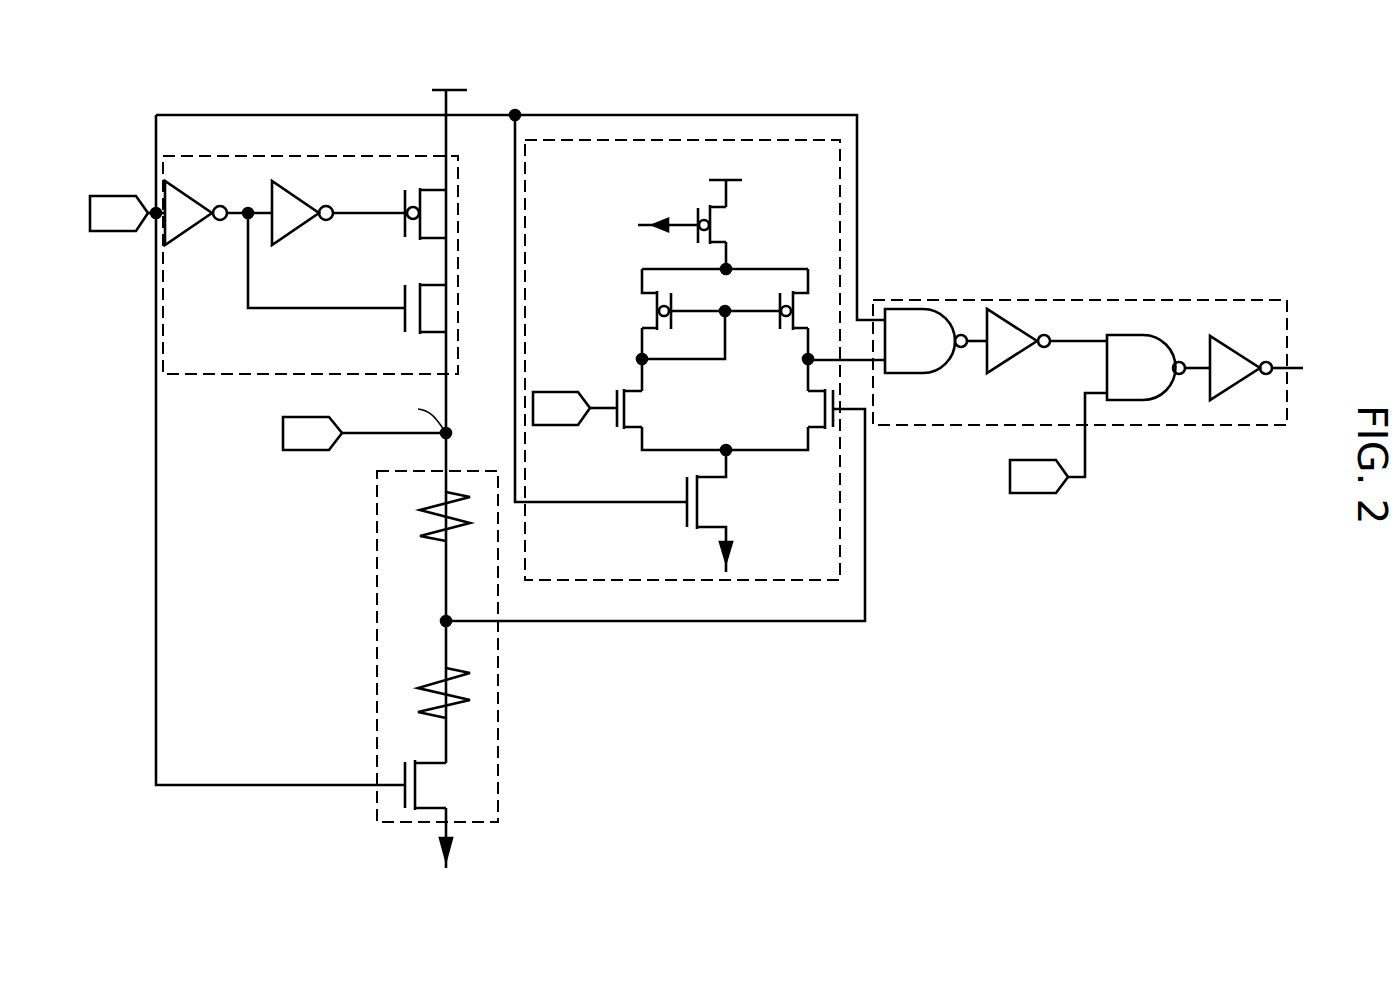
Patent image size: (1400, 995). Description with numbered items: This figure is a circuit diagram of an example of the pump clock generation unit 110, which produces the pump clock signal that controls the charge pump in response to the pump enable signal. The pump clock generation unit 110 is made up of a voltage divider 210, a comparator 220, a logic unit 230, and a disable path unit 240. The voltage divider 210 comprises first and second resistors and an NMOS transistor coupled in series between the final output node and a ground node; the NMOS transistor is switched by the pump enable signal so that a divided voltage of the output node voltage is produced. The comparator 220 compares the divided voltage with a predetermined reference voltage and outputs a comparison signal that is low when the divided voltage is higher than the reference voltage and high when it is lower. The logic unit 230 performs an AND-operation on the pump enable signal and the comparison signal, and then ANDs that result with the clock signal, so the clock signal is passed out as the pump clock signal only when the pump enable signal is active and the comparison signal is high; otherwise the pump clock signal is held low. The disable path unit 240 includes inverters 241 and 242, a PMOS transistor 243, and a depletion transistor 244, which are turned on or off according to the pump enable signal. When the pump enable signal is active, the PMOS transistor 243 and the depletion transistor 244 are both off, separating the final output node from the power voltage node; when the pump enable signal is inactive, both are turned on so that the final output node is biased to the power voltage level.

The pump clock generation unit 110 is at (1064, 108).
The voltage divider 210 is at (498, 708).
The comparator 220 is at (727, 140).
The logic unit 230 is at (1085, 300).
The disable path unit 240 is at (155, 298).
The inverter 241 is at (187, 186).
The inverter 242 is at (292, 192).
The PMOS transistor 243 is at (430, 222).
The depletion transistor 244 is at (442, 307).